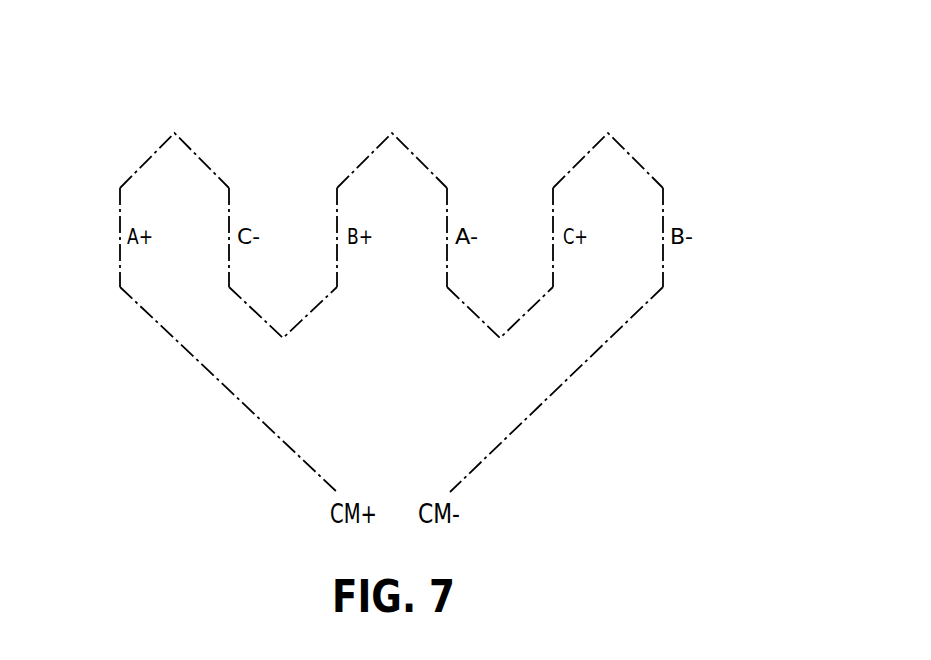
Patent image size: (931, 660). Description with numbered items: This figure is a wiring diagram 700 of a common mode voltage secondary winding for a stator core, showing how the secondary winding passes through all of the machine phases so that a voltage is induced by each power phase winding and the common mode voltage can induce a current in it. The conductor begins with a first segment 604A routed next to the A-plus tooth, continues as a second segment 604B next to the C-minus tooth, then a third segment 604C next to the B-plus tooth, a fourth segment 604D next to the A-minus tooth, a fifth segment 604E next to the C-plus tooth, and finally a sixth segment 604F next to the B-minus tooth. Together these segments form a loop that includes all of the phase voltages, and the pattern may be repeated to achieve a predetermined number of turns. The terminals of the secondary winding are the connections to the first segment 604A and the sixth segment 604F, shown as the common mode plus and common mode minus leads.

The motor winding configuration 700 is at (648, 86).
The first segment 604A is at (120, 218).
The second segment 604B is at (229, 223).
The third segment 604C is at (337, 218).
The fourth segment 604D is at (447, 220).
The fifth segment 604E is at (553, 217).
The sixth segment 604F is at (663, 219).